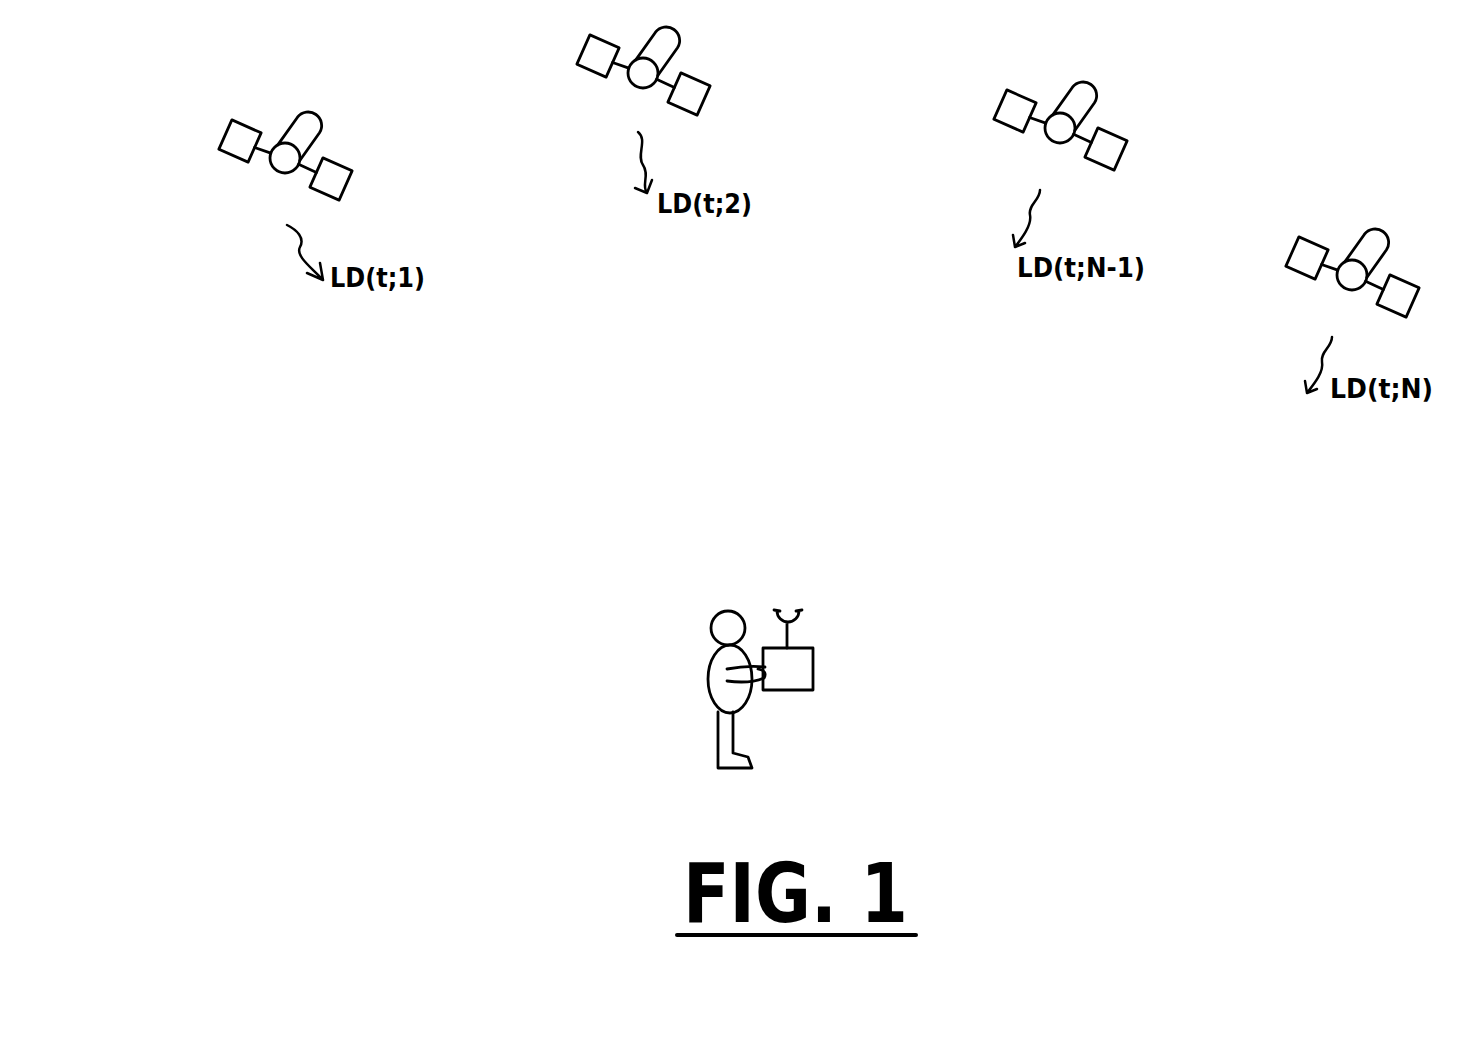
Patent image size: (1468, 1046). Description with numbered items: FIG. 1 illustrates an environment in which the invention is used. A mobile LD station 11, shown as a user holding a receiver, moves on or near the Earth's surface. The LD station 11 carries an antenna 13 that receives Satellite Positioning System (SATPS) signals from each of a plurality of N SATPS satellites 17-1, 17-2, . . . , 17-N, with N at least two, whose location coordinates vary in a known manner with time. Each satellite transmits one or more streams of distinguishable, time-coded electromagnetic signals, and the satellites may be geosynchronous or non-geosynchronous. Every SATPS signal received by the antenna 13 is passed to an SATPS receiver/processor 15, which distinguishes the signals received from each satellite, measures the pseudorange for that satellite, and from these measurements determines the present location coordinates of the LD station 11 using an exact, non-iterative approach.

The SATPS satellite 17-1 is at (283, 157).
The SATPS satellite 17-2 is at (641, 75).
The SATPS satellite 17-N is at (1350, 277).
The LD station 11 is at (859, 668).
The antenna 13 is at (789, 640).
The SATPS receiver/processor 15 is at (787, 682).